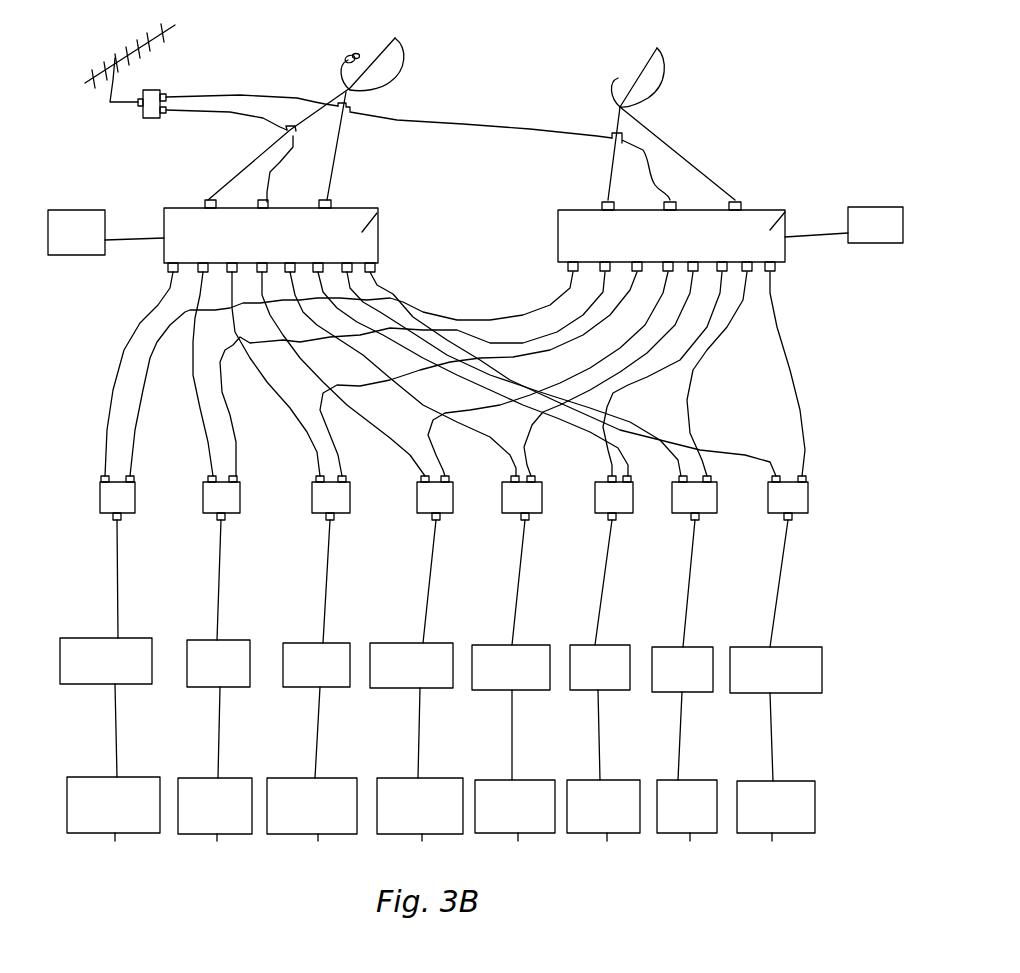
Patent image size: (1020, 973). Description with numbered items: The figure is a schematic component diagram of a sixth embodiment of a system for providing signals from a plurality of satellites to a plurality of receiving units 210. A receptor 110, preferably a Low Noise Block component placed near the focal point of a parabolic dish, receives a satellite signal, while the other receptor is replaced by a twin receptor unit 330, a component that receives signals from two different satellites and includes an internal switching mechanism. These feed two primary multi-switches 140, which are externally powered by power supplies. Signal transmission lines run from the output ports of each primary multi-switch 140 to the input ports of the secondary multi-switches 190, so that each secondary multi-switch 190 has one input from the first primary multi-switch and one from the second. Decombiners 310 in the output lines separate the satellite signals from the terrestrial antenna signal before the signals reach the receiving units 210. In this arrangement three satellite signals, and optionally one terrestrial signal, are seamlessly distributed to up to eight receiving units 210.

The receptor 110 is at (613, 88).
The twin receptor unit 330 is at (343, 53).
The primary multi-switch 140 is at (377, 217).
The secondary multi-switch 190 is at (805, 490).
The decombiner 310 is at (800, 670).
The receiving unit 210 is at (803, 797).